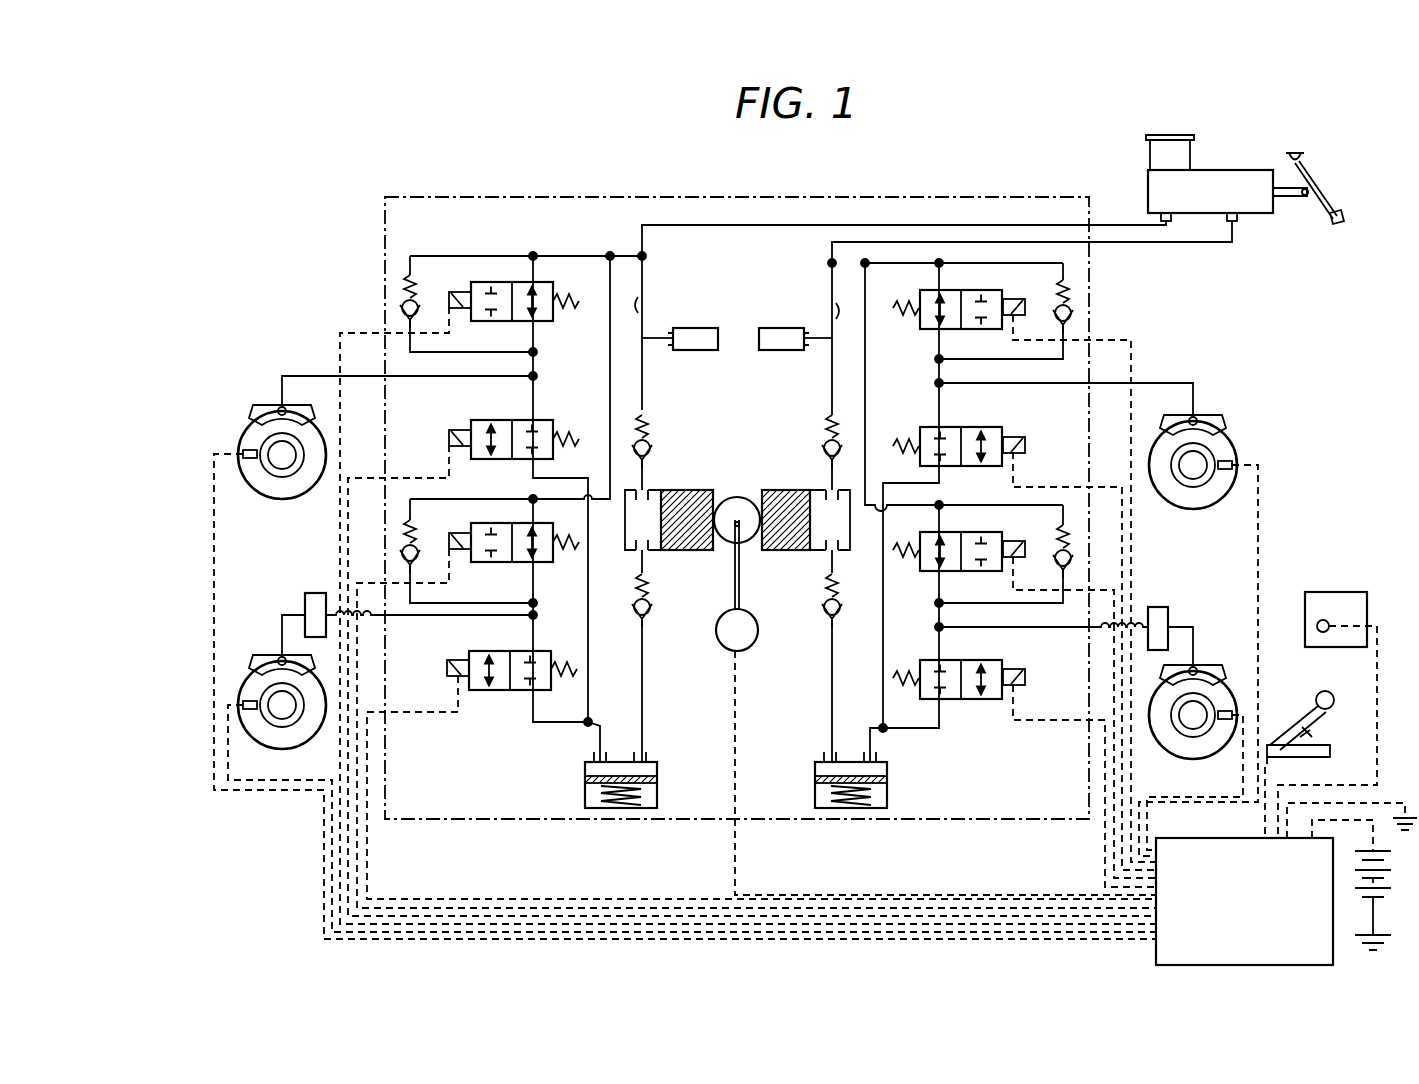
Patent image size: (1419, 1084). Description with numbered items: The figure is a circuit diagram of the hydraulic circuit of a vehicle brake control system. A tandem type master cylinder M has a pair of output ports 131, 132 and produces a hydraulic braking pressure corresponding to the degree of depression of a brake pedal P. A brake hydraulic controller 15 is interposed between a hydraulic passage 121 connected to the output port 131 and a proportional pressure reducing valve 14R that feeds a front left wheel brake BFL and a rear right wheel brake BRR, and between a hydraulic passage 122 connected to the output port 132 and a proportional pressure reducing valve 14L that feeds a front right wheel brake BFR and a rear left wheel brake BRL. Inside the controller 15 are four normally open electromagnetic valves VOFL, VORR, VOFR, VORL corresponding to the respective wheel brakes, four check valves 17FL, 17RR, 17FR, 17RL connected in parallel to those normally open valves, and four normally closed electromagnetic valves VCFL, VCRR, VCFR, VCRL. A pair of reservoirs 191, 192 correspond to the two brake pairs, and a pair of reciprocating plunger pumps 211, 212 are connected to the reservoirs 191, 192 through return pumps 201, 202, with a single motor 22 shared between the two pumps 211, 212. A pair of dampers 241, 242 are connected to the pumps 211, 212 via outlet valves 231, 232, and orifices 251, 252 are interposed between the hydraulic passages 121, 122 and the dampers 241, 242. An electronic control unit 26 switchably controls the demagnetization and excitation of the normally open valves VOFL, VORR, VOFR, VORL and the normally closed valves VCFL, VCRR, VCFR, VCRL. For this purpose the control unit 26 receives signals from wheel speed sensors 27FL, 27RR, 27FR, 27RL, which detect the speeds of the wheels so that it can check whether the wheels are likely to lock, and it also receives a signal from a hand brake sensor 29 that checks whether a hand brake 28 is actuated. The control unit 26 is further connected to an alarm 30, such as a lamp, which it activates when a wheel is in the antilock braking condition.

The brake hydraulic controller 15 is at (770, 198).
The tandem type master cylinder M is at (1233, 170).
The brake pedal P is at (1336, 216).
The output port 131 is at (1163, 213).
The output port 132 is at (1238, 222).
The hydraulic passage 121 is at (1030, 224).
The hydraulic passage 122 is at (1125, 243).
The check valve 17FL is at (406, 295).
The check valve 17RR is at (403, 540).
The check valve 17FR is at (1073, 318).
The check valve 17RL is at (1058, 552).
The normally open electromagnetic valve VOFL is at (553, 322).
The normally closed electromagnetic valve VCFL is at (482, 420).
The normally open electromagnetic valve VORR is at (485, 563).
The normally closed electromagnetic valve VCRR is at (504, 692).
The normally open electromagnetic valve VOFR is at (928, 330).
The normally closed electromagnetic valve VCFR is at (968, 428).
The normally open electromagnetic valve VORL is at (927, 572).
The normally closed electromagnetic valve VCRL is at (988, 661).
The orifice 251 is at (644, 305).
The orifice 252 is at (826, 312).
The damper 241 is at (703, 351).
The damper 242 is at (775, 328).
The outlet valve 231 is at (652, 450).
The outlet valve 232 is at (826, 440).
The reciprocating plunger pump 211 is at (686, 492).
The reciprocating plunger pump 212 is at (787, 492).
The motor 22 is at (752, 624).
The return pump 201 is at (650, 620).
The return pump 202 is at (825, 620).
The reservoir 191 is at (585, 792).
The reservoir 192 is at (815, 792).
The front left wheel brake BFL is at (264, 408).
The rear right wheel brake BRR is at (264, 656).
The front right wheel brake BFR is at (1214, 416).
The rear left wheel brake BRL is at (1212, 666).
The wheel speed sensor 27FL is at (250, 460).
The wheel speed sensor 27RR is at (250, 710).
The wheel speed sensor 27FR is at (1235, 462).
The wheel speed sensor 27RL is at (1224, 722).
The proportional pressure reducing valve 14R is at (314, 593).
The proportional pressure reducing valve 14L is at (1158, 607).
The electronic control unit 26 is at (1286, 884).
The alarm 30 is at (1318, 592).
The hand brake 28 is at (1318, 695).
The hand brake sensor 29 is at (1313, 731).